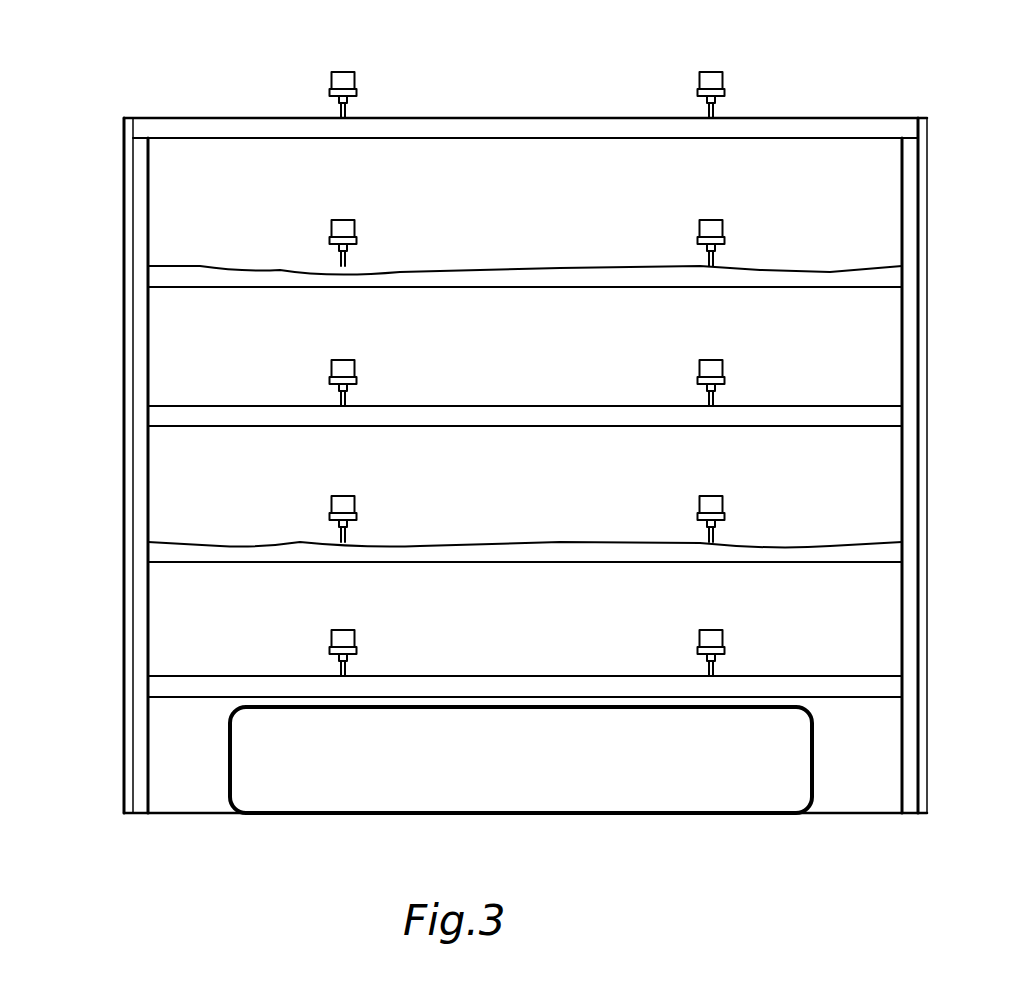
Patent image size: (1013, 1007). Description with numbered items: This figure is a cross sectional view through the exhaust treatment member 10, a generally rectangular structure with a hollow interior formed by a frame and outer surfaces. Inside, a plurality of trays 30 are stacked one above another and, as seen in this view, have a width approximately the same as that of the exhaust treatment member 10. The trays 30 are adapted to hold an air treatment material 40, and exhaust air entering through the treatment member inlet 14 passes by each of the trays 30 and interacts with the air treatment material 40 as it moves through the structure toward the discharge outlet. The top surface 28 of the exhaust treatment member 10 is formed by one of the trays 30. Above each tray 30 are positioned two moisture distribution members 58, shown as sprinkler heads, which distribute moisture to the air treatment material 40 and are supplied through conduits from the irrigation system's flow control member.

The exhaust treatment member 10 is at (283, 842).
The treatment member inlet 14 is at (705, 780).
The top surface 28 is at (548, 123).
The tray 30 is at (148, 416).
The air treatment material 40 is at (150, 688).
The moisture distribution member 58 is at (345, 83).